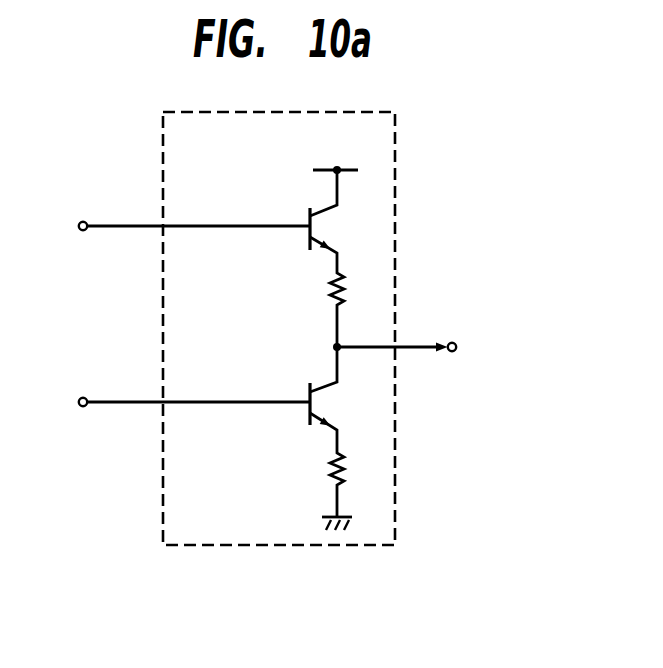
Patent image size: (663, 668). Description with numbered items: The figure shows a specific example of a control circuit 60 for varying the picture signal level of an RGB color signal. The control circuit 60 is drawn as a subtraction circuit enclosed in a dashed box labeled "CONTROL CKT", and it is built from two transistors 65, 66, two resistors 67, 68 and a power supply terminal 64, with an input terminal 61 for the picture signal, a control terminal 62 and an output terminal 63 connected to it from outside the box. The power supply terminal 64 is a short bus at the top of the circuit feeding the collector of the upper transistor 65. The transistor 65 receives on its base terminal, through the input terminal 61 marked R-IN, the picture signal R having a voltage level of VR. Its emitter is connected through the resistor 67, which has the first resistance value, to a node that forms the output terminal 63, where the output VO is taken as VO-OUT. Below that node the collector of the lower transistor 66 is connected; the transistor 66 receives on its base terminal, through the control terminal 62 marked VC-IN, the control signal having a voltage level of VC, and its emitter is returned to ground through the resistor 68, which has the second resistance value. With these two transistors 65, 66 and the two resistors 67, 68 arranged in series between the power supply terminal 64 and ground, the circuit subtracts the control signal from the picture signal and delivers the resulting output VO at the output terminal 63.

The control circuit 60 is at (397, 130).
The input terminal 61 is at (84, 221).
The control terminal 62 is at (84, 397).
The output terminal 63 is at (452, 342).
The power supply terminal 64 is at (333, 169).
The transistor 65 is at (307, 224).
The transistor 66 is at (307, 400).
The resistor 67 is at (330, 289).
The resistor 68 is at (331, 469).